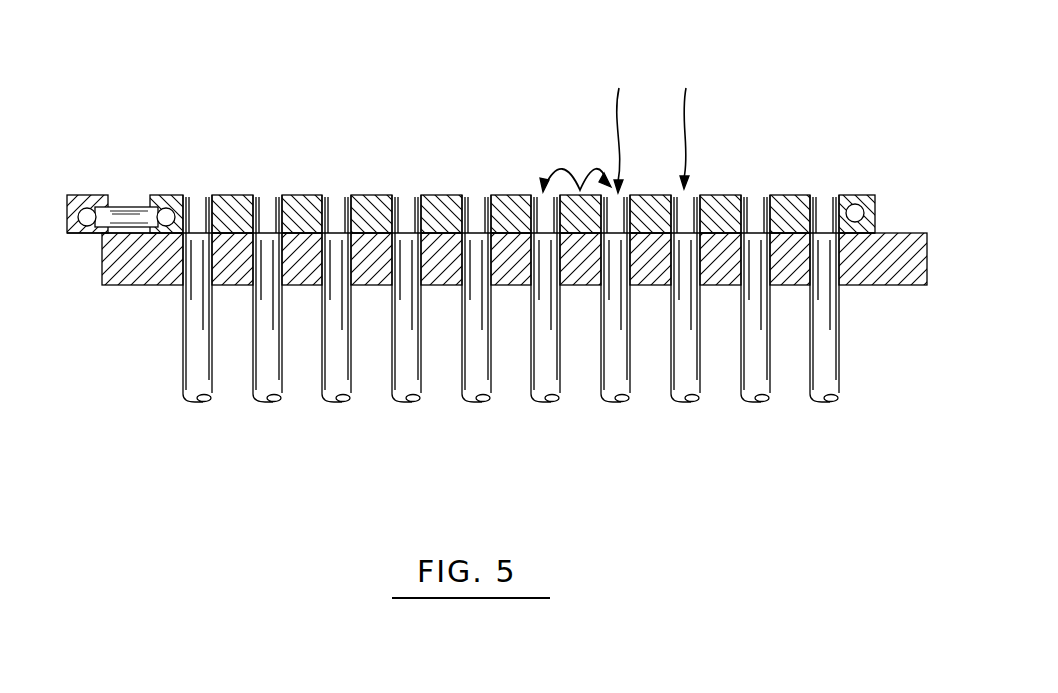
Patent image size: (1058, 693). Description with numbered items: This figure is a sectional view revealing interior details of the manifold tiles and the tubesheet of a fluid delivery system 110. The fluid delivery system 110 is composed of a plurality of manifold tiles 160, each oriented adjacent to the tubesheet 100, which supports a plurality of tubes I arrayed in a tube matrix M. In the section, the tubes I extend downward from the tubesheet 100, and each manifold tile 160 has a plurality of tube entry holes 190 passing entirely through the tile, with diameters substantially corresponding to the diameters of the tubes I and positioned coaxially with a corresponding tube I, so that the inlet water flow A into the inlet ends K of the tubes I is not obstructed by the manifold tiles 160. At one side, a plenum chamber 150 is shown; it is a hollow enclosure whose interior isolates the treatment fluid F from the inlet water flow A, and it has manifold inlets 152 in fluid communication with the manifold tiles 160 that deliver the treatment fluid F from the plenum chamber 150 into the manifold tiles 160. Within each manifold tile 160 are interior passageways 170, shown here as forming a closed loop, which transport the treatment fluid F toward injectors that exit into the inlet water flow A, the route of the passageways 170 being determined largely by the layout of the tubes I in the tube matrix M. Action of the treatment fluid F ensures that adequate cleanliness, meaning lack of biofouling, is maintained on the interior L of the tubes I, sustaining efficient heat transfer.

The tubesheet 100 is at (885, 285).
The fluid delivery system 110 is at (225, 137).
The plenum chamber 150 is at (80, 195).
The manifold inlet 152 is at (128, 207).
The manifold tile 160 is at (305, 195).
The interior passageway 170 is at (165, 207).
The tube entry hole 190 is at (417, 195).
The inlet end K is at (272, 196).
The tube I is at (187, 383).
The interior L is at (553, 401).
The treatment fluid F is at (591, 170).
The inlet water flow A is at (690, 136).
The tube matrix M is at (688, 432).